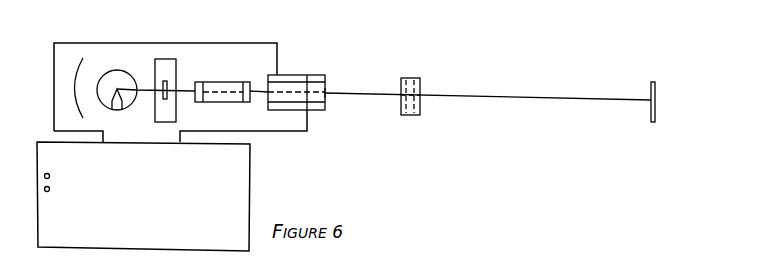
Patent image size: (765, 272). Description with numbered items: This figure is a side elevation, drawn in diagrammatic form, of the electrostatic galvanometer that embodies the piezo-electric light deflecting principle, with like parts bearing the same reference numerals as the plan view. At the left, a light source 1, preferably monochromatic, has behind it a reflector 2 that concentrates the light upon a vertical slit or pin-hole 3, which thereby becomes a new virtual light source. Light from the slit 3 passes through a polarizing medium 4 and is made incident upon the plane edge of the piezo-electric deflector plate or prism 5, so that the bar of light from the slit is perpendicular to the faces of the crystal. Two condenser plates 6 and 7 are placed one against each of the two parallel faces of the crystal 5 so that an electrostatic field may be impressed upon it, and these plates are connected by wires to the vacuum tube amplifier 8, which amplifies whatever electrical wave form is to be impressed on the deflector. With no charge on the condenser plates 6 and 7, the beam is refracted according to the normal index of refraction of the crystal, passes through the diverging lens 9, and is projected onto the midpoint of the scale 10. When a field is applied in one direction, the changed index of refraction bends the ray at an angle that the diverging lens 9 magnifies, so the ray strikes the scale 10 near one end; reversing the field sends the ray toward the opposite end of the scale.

The light source 1 is at (133, 66).
The reflector 2 is at (70, 82).
The vertical slit or pin-hole 3 is at (173, 82).
The polarizing medium 4 is at (238, 74).
The piezo-electric deflector plate or prism 5 is at (334, 101).
The condenser plate 6 is at (314, 67).
The condenser plate 7 is at (312, 113).
The vacuum tube amplifier 8 is at (143, 196).
The diverging lens 9 is at (421, 73).
The scale 10 is at (650, 93).